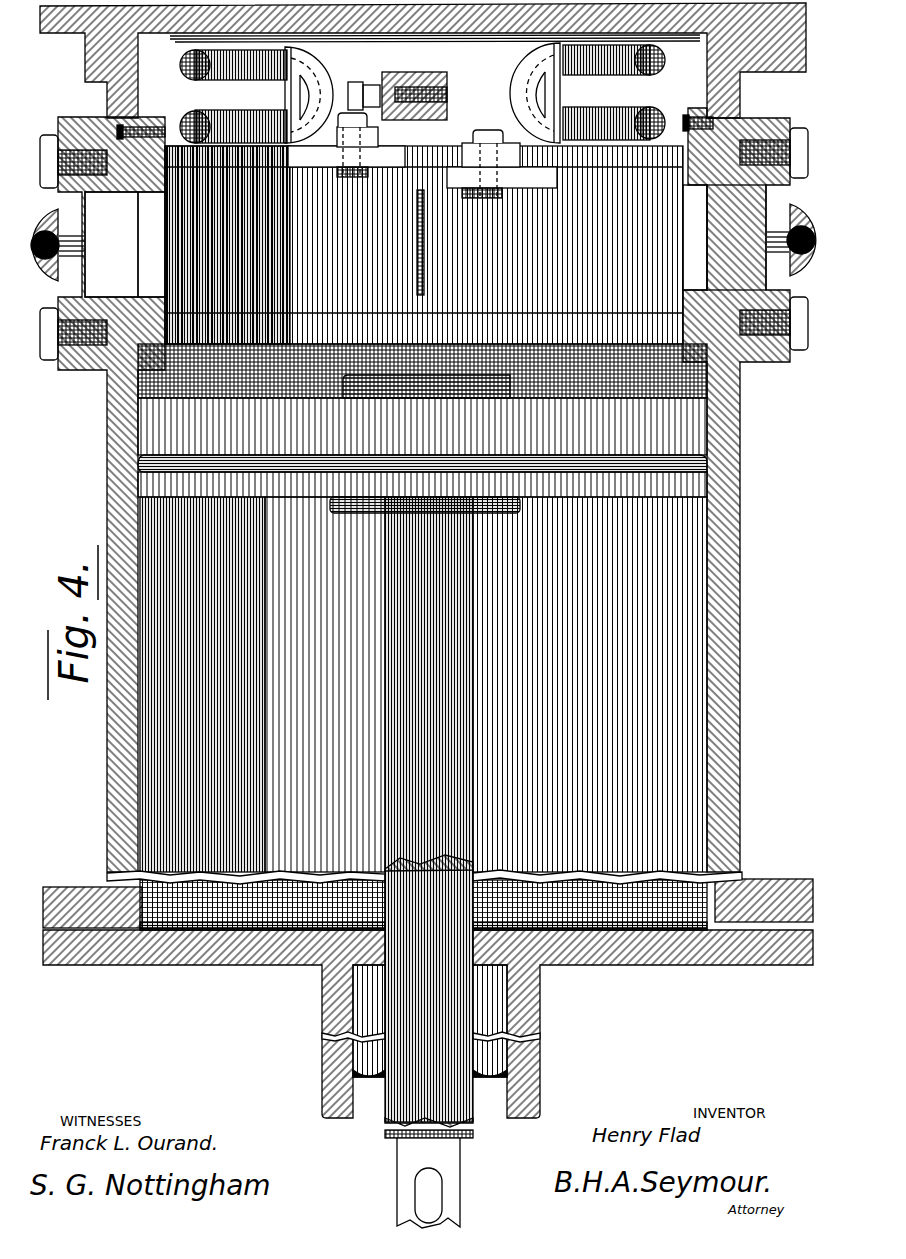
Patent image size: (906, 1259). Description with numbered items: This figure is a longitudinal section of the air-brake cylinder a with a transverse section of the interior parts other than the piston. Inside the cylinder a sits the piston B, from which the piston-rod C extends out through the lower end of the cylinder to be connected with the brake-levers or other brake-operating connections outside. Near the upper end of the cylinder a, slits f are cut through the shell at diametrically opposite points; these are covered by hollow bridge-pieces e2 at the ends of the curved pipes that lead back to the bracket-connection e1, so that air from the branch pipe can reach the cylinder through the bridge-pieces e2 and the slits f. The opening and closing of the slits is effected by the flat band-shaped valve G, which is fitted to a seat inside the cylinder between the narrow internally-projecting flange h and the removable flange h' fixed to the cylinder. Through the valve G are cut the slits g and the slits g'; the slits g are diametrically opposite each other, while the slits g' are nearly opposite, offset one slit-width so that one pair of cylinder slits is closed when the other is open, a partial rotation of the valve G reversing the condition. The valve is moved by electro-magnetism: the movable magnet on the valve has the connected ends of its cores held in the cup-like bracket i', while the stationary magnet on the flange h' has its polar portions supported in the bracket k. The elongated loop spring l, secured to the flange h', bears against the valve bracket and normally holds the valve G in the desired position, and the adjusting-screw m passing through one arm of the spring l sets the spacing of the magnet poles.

The cylinder a is at (428, 613).
The piston B is at (422, 637).
The piston-rod C is at (416, 862).
The valve G is at (424, 228).
The slits g is at (422, 241).
The slits g' is at (406, 242).
The slits f is at (425, 241).
The bracket-connection e1 is at (801, 231).
The hollow bridge-pieces e2 is at (53, 233).
The internally-projecting flange h is at (424, 244).
The removable flange h' is at (415, 113).
The bracket k is at (233, 96).
The loop spring l is at (614, 92).
The cup-like bracket i' is at (422, 93).
The adjusting-screw m is at (426, 76).